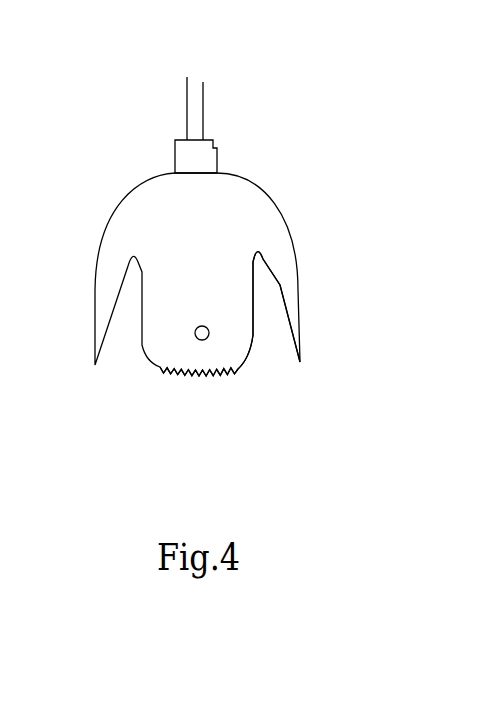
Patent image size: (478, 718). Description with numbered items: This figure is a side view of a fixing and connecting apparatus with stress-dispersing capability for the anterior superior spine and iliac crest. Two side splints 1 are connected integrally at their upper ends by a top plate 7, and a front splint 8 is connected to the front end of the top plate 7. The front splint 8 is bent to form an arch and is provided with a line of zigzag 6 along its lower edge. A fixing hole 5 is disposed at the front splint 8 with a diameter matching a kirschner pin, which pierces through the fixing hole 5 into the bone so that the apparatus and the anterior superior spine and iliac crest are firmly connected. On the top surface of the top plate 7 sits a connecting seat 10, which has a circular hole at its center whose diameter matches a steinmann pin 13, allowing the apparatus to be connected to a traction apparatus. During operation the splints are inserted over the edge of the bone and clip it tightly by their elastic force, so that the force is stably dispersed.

The side splint 1 is at (350, 253).
The fixing hole 5 is at (195, 340).
The line of zigzag 6 is at (209, 377).
The top plate 7 is at (235, 207).
The front splint 8 is at (228, 350).
The connecting seat 10 is at (175, 153).
The steinmann pin 13 is at (187, 105).